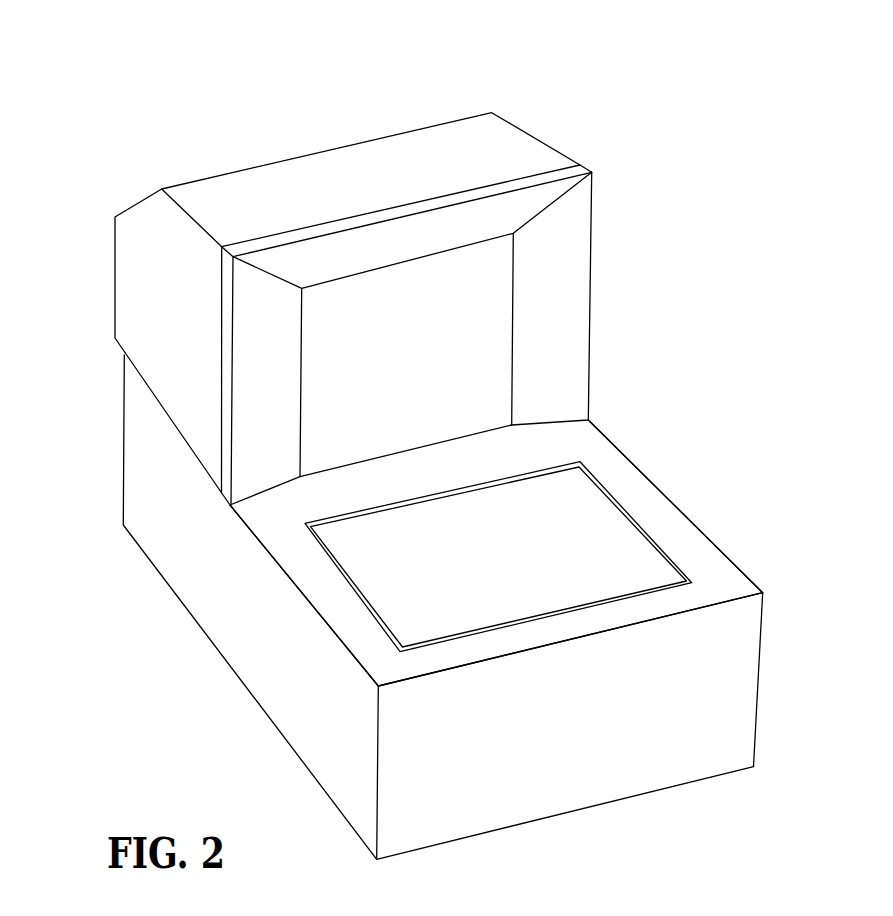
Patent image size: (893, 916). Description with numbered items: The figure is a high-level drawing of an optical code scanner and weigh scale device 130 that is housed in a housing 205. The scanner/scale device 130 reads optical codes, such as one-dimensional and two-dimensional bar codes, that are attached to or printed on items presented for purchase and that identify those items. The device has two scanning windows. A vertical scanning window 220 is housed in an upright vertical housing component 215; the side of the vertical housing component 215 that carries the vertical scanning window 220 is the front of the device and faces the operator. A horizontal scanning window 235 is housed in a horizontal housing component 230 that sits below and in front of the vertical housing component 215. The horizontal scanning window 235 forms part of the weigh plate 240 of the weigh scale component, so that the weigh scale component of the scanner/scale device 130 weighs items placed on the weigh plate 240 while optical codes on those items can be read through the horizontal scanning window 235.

The optical code scanner and weigh scale device 130 is at (144, 68).
The housing 205 is at (140, 474).
The vertical housing component 215 is at (507, 143).
The vertical scanning window 220 is at (465, 307).
The horizontal housing component 230 is at (633, 493).
The horizontal scanning window 235 is at (641, 560).
The weigh plate 240 is at (333, 565).